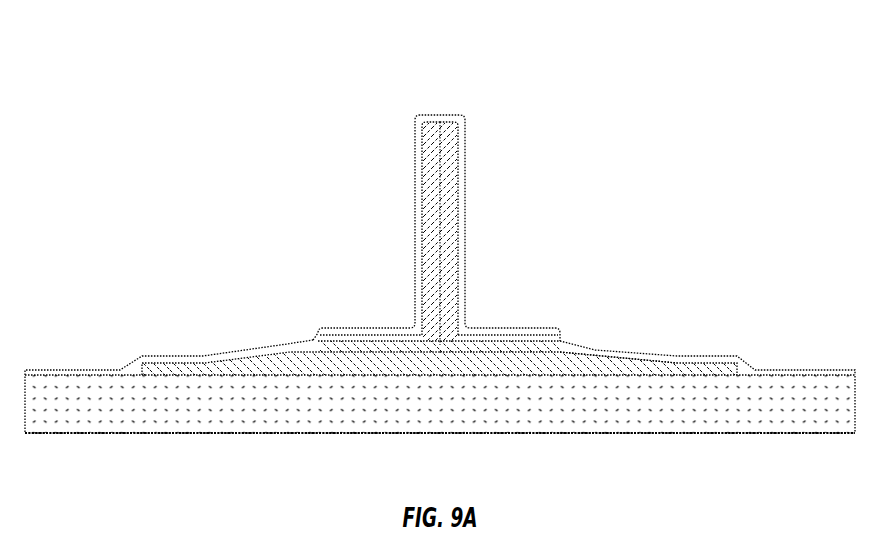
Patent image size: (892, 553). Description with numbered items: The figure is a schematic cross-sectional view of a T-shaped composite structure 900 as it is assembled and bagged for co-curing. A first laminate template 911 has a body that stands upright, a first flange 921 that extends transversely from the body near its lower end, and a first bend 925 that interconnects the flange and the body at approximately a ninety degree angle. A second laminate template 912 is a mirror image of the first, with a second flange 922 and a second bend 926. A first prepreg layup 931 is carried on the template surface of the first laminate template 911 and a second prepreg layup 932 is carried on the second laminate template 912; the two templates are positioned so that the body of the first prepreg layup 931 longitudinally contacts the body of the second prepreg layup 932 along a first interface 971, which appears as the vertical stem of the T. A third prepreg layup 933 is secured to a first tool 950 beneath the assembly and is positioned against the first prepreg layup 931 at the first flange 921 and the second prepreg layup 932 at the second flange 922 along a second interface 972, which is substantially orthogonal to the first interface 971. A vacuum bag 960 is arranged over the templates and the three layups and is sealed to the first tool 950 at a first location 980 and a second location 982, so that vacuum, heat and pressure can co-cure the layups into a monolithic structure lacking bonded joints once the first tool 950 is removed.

The semiconductor device 900 is at (108, 72).
The first laminate template 911 is at (422, 122).
The second laminate template 912 is at (454, 192).
The first flange 921 is at (320, 332).
The second flange 922 is at (533, 335).
The first bend 925 is at (405, 317).
The second bend 926 is at (472, 316).
The first prepreg layup 931 is at (391, 347).
The second prepreg layup 932 is at (511, 332).
The third prepreg layup 933 is at (602, 355).
The first tool 950 is at (429, 424).
The vacuum bag 960 is at (413, 240).
The first interface 971 is at (451, 235).
The second interface 972 is at (366, 338).
The first location 980 is at (78, 362).
The second location 982 is at (806, 362).